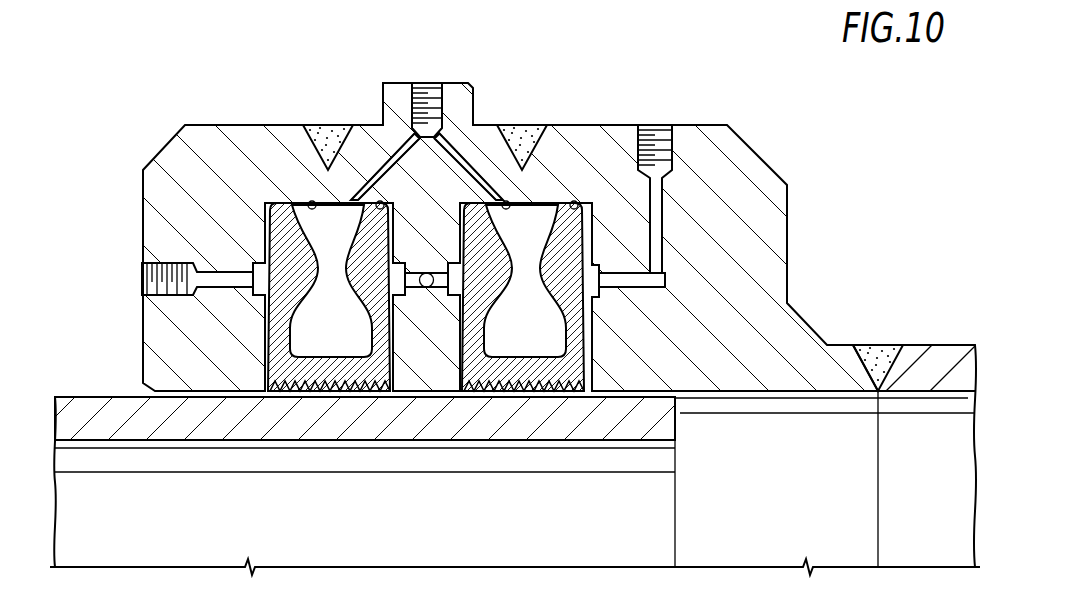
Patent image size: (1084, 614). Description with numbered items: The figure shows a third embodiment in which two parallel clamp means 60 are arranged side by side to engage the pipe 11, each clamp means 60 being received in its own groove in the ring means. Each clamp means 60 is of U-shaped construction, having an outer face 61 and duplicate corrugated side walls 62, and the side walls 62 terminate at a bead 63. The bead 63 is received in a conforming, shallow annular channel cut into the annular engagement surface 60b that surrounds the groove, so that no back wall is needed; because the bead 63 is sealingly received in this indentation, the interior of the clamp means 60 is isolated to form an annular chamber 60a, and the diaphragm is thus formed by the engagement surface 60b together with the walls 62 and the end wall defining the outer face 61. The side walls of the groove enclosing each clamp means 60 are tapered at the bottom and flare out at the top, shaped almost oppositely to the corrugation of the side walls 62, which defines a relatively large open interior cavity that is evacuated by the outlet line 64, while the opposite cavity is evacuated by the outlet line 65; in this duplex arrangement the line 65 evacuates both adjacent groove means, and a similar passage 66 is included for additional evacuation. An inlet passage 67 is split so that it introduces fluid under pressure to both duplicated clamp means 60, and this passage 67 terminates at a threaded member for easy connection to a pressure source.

The base plate 11 is at (667, 420).
The clamp means 60 is at (299, 189).
The annular chamber 60a is at (268, 320).
The annular engagement surface 60b is at (312, 201).
The outer face 61 is at (333, 356).
The side walls 62 is at (265, 255).
The bead 63 is at (267, 227).
The outlet line 64 is at (196, 284).
The outlet line 65 is at (383, 199).
The passage 66 is at (660, 200).
The inlet passage 67 is at (434, 92).